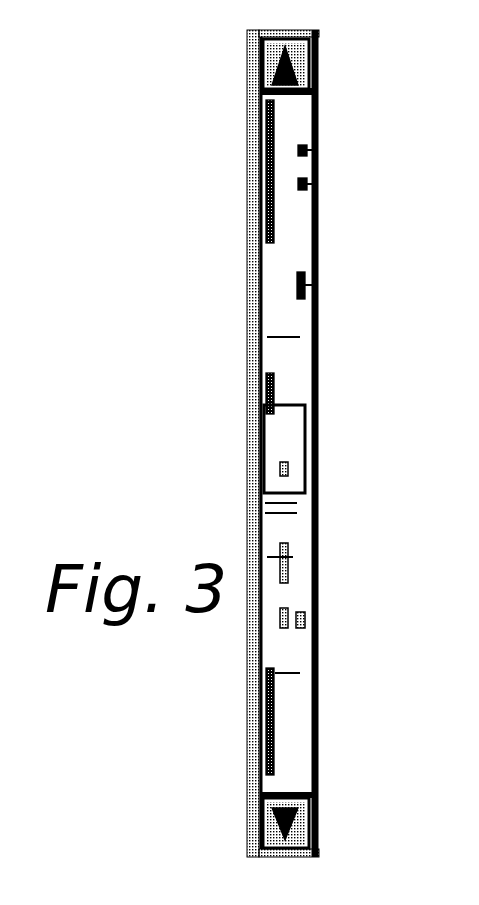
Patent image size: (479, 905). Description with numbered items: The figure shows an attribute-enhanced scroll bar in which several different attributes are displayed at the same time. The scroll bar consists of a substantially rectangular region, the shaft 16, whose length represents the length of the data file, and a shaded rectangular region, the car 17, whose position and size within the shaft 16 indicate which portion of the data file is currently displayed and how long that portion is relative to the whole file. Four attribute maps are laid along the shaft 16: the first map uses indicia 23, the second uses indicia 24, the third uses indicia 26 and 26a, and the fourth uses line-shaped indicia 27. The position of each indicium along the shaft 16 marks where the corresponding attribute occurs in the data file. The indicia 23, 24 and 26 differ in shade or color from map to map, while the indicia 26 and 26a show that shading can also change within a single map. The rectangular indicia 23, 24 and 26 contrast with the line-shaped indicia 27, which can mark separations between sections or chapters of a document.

The shaft 16 is at (319, 381).
The car 17 is at (306, 451).
The indicia 23 is at (268, 135).
The indicia 24 is at (288, 469).
The indicia 26 is at (319, 149).
The indicia 26a is at (305, 620).
The line-shaped indicia 27 is at (290, 334).